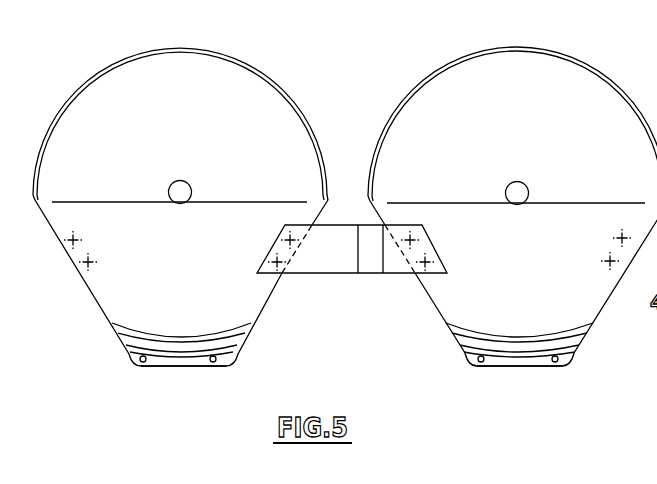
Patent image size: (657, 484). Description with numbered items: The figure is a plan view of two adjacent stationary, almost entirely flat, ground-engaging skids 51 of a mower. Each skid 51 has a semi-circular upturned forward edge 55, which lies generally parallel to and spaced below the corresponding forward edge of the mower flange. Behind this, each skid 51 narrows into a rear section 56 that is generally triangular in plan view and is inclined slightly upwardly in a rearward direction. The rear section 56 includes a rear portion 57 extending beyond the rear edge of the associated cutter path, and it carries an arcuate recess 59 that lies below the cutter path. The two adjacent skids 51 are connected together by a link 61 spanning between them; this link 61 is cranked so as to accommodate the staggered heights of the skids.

The skid 51 is at (103, 311).
The upturned forward edge 55 is at (251, 62).
The rear section 56 is at (84, 279).
The rear portion 57 is at (182, 367).
The arcuate recess 59 is at (249, 327).
The link 61 is at (343, 274).